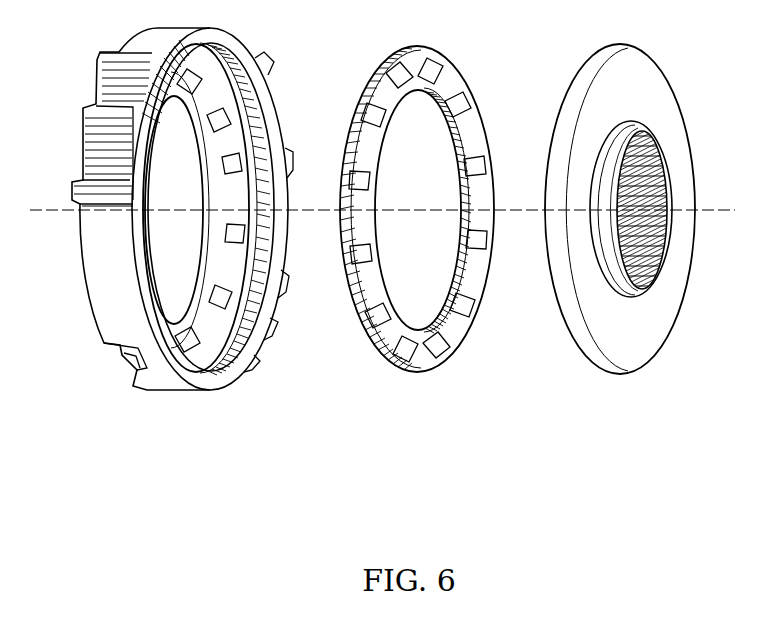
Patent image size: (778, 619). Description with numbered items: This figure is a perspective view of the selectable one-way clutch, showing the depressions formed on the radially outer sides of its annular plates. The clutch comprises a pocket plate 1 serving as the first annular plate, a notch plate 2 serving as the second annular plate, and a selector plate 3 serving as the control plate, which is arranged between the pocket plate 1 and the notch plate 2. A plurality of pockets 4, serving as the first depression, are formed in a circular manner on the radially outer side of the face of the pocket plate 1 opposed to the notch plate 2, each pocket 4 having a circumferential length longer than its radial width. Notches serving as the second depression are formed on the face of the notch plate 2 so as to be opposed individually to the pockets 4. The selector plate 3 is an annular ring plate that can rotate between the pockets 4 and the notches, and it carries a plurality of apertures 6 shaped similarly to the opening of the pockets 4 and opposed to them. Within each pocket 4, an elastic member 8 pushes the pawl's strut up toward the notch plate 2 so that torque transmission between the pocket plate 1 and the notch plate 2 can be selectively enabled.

The pocket plate 1 is at (212, 232).
The notch plate 2 is at (626, 374).
The selector plate 3 is at (423, 232).
The pocket 4 is at (243, 240).
The aperture 6 is at (462, 104).
The elastic member 8 is at (233, 155).